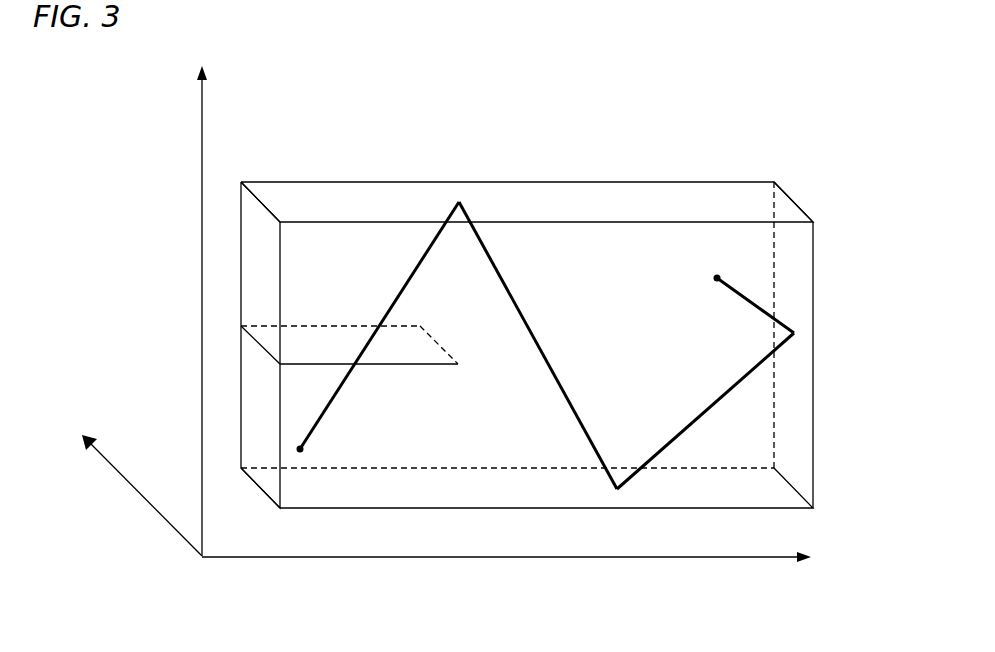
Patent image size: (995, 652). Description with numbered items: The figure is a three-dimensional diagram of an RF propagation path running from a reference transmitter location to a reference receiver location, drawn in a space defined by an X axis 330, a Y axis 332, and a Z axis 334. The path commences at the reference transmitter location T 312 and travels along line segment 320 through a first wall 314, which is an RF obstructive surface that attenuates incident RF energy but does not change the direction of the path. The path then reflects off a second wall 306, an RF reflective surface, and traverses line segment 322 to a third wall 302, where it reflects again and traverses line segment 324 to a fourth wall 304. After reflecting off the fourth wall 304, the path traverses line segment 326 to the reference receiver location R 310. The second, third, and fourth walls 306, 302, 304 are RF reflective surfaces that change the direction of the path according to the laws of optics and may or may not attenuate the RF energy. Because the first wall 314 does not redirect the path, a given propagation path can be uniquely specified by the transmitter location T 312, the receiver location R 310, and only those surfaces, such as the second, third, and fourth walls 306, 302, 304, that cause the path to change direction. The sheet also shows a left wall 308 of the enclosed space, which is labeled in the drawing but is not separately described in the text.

The third wall 302 is at (530, 496).
The fourth wall 304 is at (825, 379).
The second wall 306 is at (552, 205).
The left wall of room 308 is at (259, 414).
The reference receiver location 310 is at (714, 278).
The reference transmitter location 312 is at (303, 450).
The first wall 314 is at (324, 351).
The line segment 320 is at (343, 383).
The line segment 322 is at (531, 326).
The line segment 324 is at (714, 402).
The line segment 326 is at (748, 301).
The X axis 330 is at (366, 558).
The Y axis 332 is at (202, 163).
The Z axis 334 is at (140, 493).